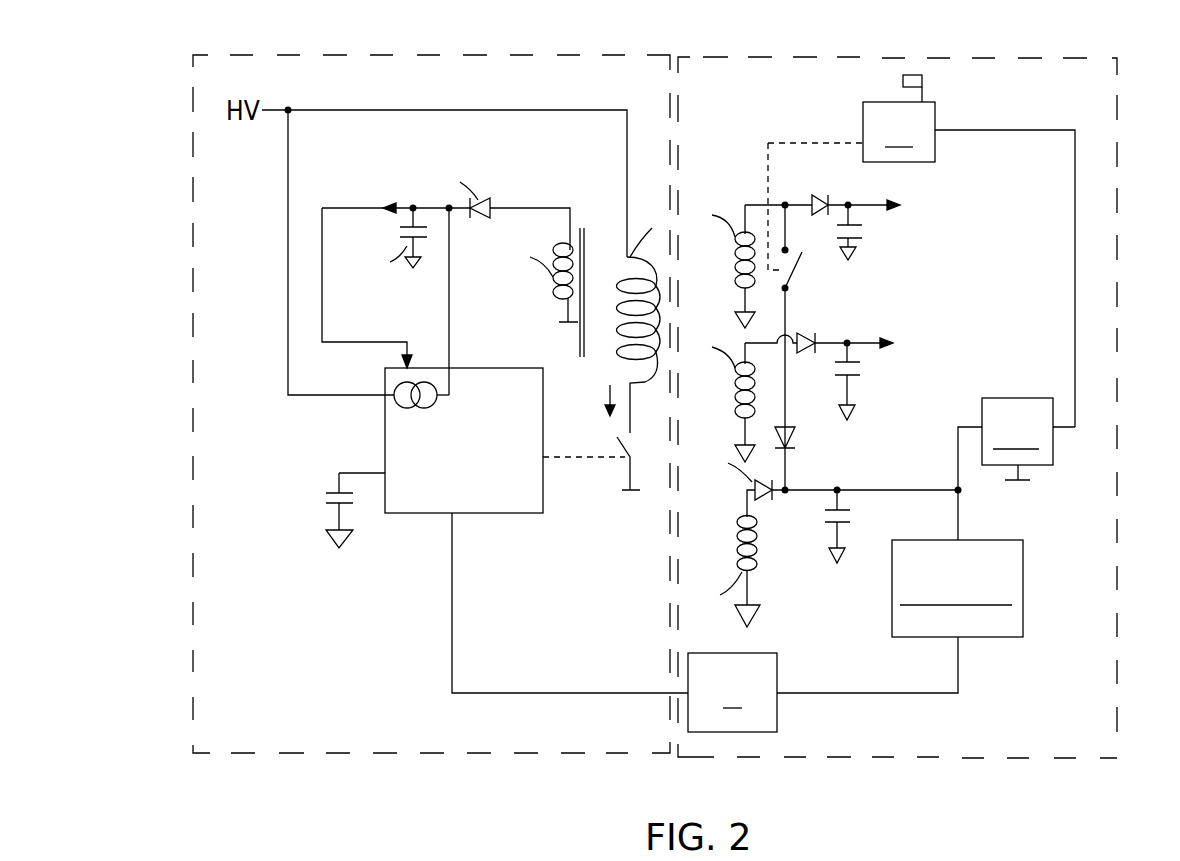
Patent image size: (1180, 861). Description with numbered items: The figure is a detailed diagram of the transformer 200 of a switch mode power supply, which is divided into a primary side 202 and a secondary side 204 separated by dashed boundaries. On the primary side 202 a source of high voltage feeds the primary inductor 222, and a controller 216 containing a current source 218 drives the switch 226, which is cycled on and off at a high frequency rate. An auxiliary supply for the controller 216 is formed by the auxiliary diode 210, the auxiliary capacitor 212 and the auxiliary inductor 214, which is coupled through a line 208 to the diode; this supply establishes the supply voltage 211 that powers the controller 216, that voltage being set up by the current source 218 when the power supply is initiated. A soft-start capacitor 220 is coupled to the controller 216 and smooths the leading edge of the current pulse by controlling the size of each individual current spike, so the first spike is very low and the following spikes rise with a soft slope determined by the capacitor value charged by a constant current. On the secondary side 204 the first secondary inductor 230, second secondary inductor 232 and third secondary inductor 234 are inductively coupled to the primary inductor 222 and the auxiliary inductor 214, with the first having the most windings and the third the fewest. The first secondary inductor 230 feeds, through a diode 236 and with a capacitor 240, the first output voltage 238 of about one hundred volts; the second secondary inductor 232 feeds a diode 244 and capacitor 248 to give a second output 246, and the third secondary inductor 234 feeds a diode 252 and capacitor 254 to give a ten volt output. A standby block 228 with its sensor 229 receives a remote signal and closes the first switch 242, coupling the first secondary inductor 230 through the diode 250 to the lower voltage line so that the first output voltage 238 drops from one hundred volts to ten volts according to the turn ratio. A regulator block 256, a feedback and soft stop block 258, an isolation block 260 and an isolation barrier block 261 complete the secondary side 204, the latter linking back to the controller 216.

The transformer 200 is at (190, 382).
The primary side 202 is at (480, 55).
The secondary side 204 is at (1118, 377).
The auxiliary supply line 208 is at (523, 206).
The auxiliary diode 210 is at (478, 222).
The voltage Vcc 211 is at (362, 185).
The auxiliary capacitor 212 is at (418, 242).
The auxiliary inductor 214 is at (555, 303).
The controller 216 is at (510, 474).
The current source 218 is at (414, 410).
The soft-start capacitor 220 is at (330, 508).
The primary inductor 222 is at (613, 282).
The switch S 226 is at (630, 492).
The standby block 228 is at (937, 122).
The sensor 229 is at (925, 81).
The first secondary inductor 230 is at (735, 275).
The second secondary inductor 232 is at (735, 385).
The third secondary inductor 234 is at (752, 540).
The diode d1 236 is at (824, 196).
The output voltage V1 238 is at (925, 212).
The capacitor C1 240 is at (862, 232).
The first switch S1 242 is at (800, 262).
The diode d2 244 is at (818, 340).
The output V2 246 is at (893, 340).
The capacitor C2 248 is at (862, 370).
The diode 250 is at (797, 435).
The diode d3 252 is at (765, 495).
The capacitor C3 254 is at (852, 513).
The regulator block 256 is at (1018, 398).
The feedback and soft stop block 258 is at (1023, 573).
The isolation block 260 is at (936, 488).
The isolation barrier circuit IB 261 is at (777, 670).